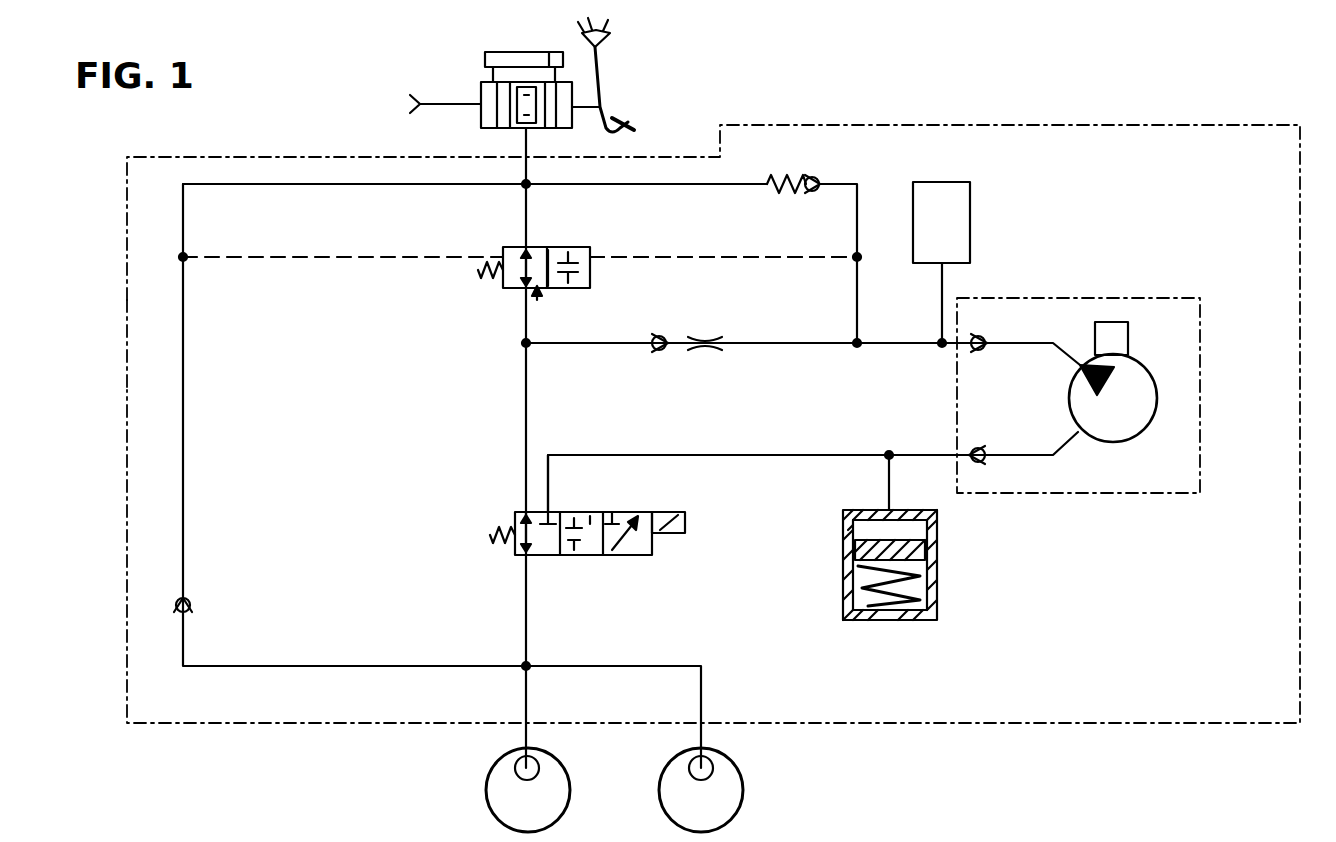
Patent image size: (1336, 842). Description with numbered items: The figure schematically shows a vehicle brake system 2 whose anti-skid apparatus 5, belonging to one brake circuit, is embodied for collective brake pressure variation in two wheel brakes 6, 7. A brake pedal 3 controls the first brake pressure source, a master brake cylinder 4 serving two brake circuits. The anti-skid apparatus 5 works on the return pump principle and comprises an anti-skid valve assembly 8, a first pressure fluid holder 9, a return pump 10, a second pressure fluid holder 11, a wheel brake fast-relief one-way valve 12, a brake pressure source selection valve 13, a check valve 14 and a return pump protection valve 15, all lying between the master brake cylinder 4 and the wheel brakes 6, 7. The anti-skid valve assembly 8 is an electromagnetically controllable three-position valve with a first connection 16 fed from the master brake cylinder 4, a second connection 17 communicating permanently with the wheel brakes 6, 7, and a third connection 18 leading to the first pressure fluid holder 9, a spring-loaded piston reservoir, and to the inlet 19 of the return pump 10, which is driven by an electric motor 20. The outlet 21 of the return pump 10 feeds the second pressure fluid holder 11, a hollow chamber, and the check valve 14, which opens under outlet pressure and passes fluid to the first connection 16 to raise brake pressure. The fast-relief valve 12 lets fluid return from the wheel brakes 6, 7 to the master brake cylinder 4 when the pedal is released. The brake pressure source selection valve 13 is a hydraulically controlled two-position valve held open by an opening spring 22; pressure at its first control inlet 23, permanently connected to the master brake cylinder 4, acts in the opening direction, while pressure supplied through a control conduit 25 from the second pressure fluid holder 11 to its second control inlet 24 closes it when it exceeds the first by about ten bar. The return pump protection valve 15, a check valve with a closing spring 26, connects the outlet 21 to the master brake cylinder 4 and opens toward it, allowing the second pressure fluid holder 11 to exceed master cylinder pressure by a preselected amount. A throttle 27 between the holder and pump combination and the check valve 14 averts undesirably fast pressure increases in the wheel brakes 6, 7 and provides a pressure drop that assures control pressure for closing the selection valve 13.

The vehicle brake system 2 is at (1150, 122).
The brake pedal 3 is at (632, 120).
The master brake cylinder 4 is at (485, 115).
The anti-skid apparatus 5 is at (130, 345).
The wheel brake 6 is at (540, 770).
The wheel brake 7 is at (713, 773).
The anti-skid valve assembly 8 is at (550, 558).
The first pressure fluid holder 9 is at (937, 556).
The return pump 10 is at (1088, 298).
The second pressure fluid holder 11 is at (955, 207).
The wheel brake fast-relief one-way valve 12 is at (188, 598).
The brake pressure source selection valve 13 is at (538, 302).
The check valve 14 is at (655, 352).
The return pump protection valve 15 is at (815, 176).
The first connection 16 is at (522, 512).
The second connection 17 is at (522, 556).
The third connection 18 is at (550, 512).
The inlet 19 is at (965, 450).
The electric motor 20 is at (1126, 340).
The outlet 21 is at (950, 350).
The opening spring 22 is at (480, 276).
The first control inlet 23 is at (503, 255).
The second control inlet 24 is at (590, 252).
The control conduit 25 is at (748, 255).
The closing spring 26 is at (785, 180).
The throttle 27 is at (706, 340).